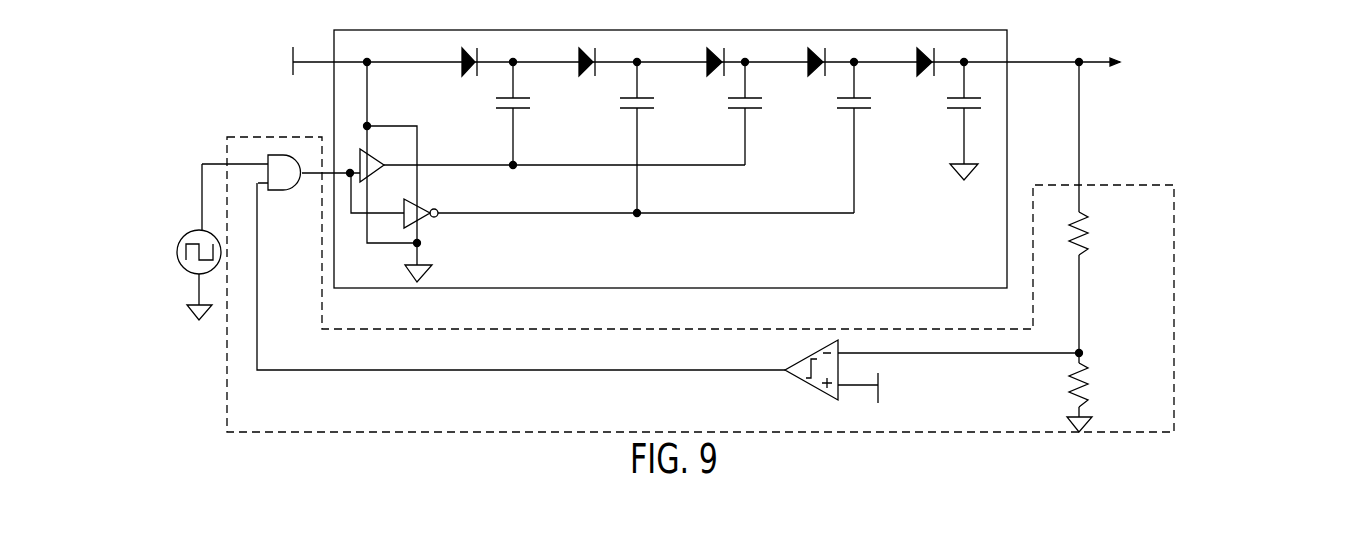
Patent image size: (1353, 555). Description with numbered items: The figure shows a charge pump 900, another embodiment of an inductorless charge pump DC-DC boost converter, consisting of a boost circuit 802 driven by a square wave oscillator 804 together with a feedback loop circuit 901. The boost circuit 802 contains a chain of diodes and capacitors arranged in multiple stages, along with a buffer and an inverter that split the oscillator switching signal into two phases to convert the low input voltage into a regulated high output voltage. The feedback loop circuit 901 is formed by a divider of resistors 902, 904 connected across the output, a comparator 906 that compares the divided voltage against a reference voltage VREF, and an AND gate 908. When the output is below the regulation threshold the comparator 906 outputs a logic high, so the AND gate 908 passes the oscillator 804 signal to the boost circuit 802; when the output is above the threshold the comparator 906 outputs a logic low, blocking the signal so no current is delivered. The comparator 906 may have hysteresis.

The boost circuit 802 is at (975, 280).
The square wave oscillator 804 is at (177, 252).
The charge pump 900 is at (696, 231).
The feedback loop circuit 901 is at (1158, 218).
The resistor 902 is at (1086, 235).
The resistor 904 is at (1086, 365).
The comparator 906 is at (812, 387).
The AND gate 908 is at (275, 190).